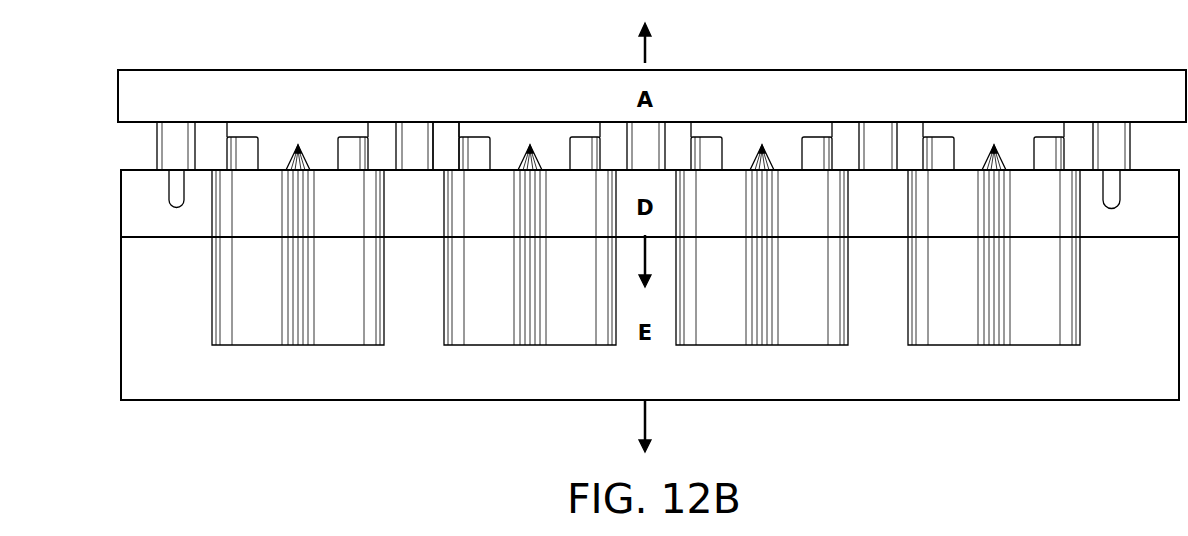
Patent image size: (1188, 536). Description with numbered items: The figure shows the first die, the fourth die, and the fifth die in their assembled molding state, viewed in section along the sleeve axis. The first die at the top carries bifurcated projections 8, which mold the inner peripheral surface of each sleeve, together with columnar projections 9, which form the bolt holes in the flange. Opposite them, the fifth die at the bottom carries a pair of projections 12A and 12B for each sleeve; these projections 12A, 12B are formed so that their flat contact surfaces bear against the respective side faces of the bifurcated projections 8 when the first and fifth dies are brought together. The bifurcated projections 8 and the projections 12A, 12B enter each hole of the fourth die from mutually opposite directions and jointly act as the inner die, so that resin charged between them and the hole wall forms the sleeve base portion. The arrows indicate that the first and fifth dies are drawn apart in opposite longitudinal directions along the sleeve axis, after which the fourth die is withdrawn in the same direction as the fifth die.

The bifurcated projections 8 is at (343, 153).
The columnar projections 9 is at (437, 147).
The projection 12A is at (227, 157).
The projection 12B is at (413, 96).